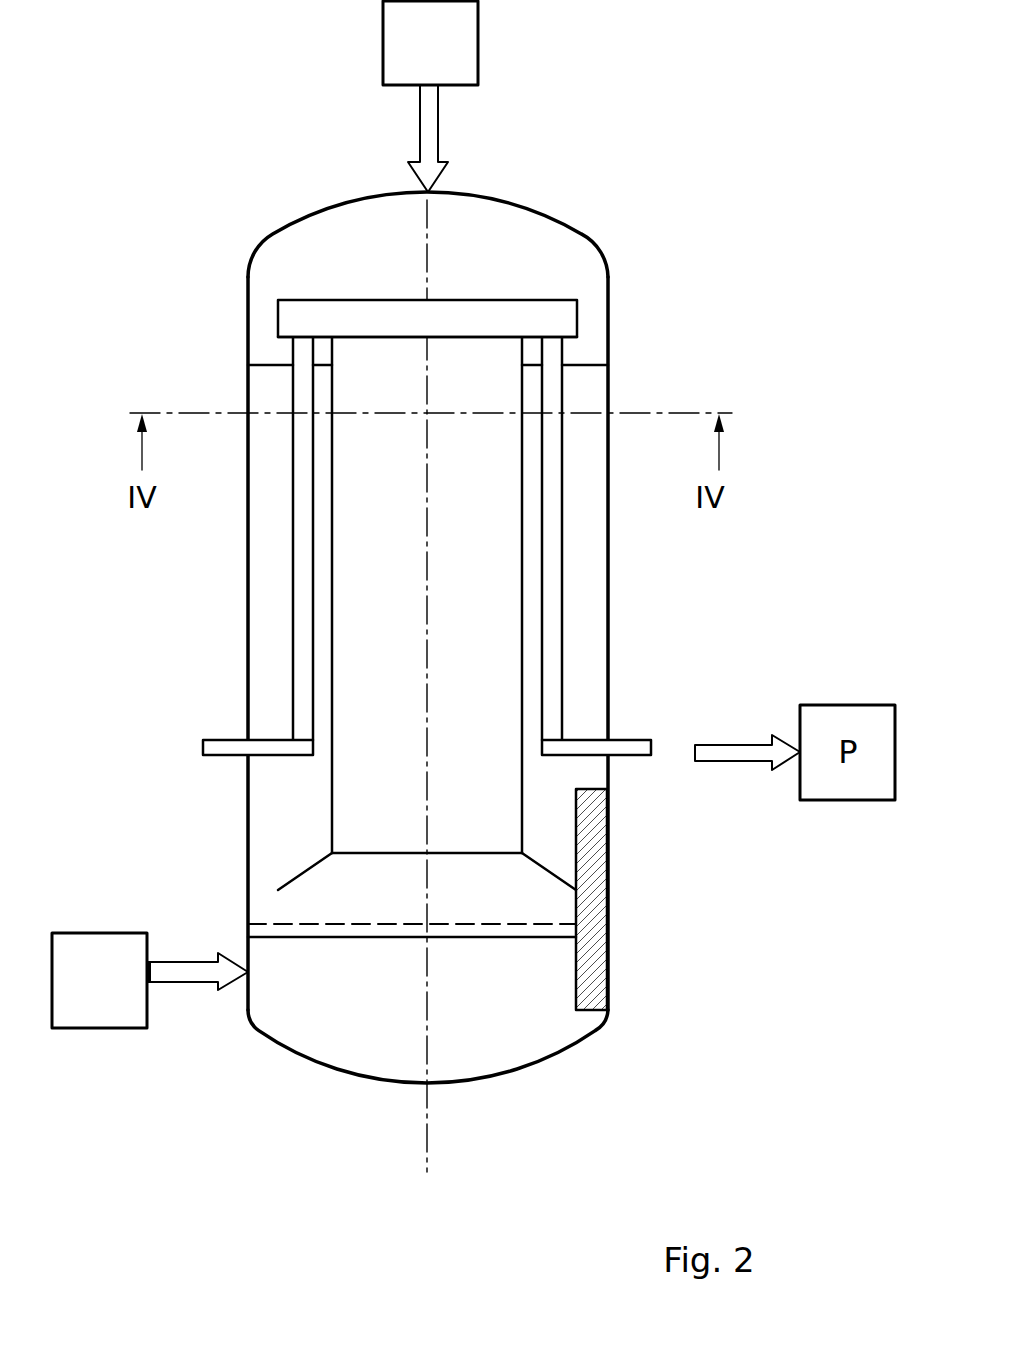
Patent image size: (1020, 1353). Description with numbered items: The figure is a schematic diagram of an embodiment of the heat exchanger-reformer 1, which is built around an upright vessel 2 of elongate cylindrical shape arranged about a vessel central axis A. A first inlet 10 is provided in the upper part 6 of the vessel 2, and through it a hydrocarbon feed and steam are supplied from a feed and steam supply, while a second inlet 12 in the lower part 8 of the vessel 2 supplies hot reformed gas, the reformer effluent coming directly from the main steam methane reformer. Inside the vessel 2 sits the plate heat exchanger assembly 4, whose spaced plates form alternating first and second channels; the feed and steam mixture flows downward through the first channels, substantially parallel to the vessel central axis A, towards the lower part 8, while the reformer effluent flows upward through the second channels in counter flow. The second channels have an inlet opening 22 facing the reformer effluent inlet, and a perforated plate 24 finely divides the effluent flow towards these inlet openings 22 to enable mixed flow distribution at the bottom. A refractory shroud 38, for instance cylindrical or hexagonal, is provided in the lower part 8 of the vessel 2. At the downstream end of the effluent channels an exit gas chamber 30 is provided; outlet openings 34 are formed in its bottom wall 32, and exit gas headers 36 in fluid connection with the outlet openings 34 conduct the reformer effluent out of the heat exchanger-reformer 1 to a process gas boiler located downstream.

The heat exchanger-reformer 1 is at (606, 193).
The vessel 2 is at (608, 540).
The plate heat exchanger assembly 4 is at (367, 541).
The upper part of the vessel 6 is at (221, 276).
The lower part of the vessel 8 is at (221, 893).
The first inlet 10 is at (438, 190).
The second inlet 12 is at (247, 975).
The inlet opening 22 is at (376, 855).
The perforated plate 24 is at (463, 922).
The exit gas chamber 30 is at (553, 318).
The bottom wall 32 is at (483, 337).
The outlet opening 34 is at (300, 340).
The exit gas header 36 is at (298, 617).
The refractory shroud 38 is at (592, 841).
The vessel central axis A is at (427, 1165).